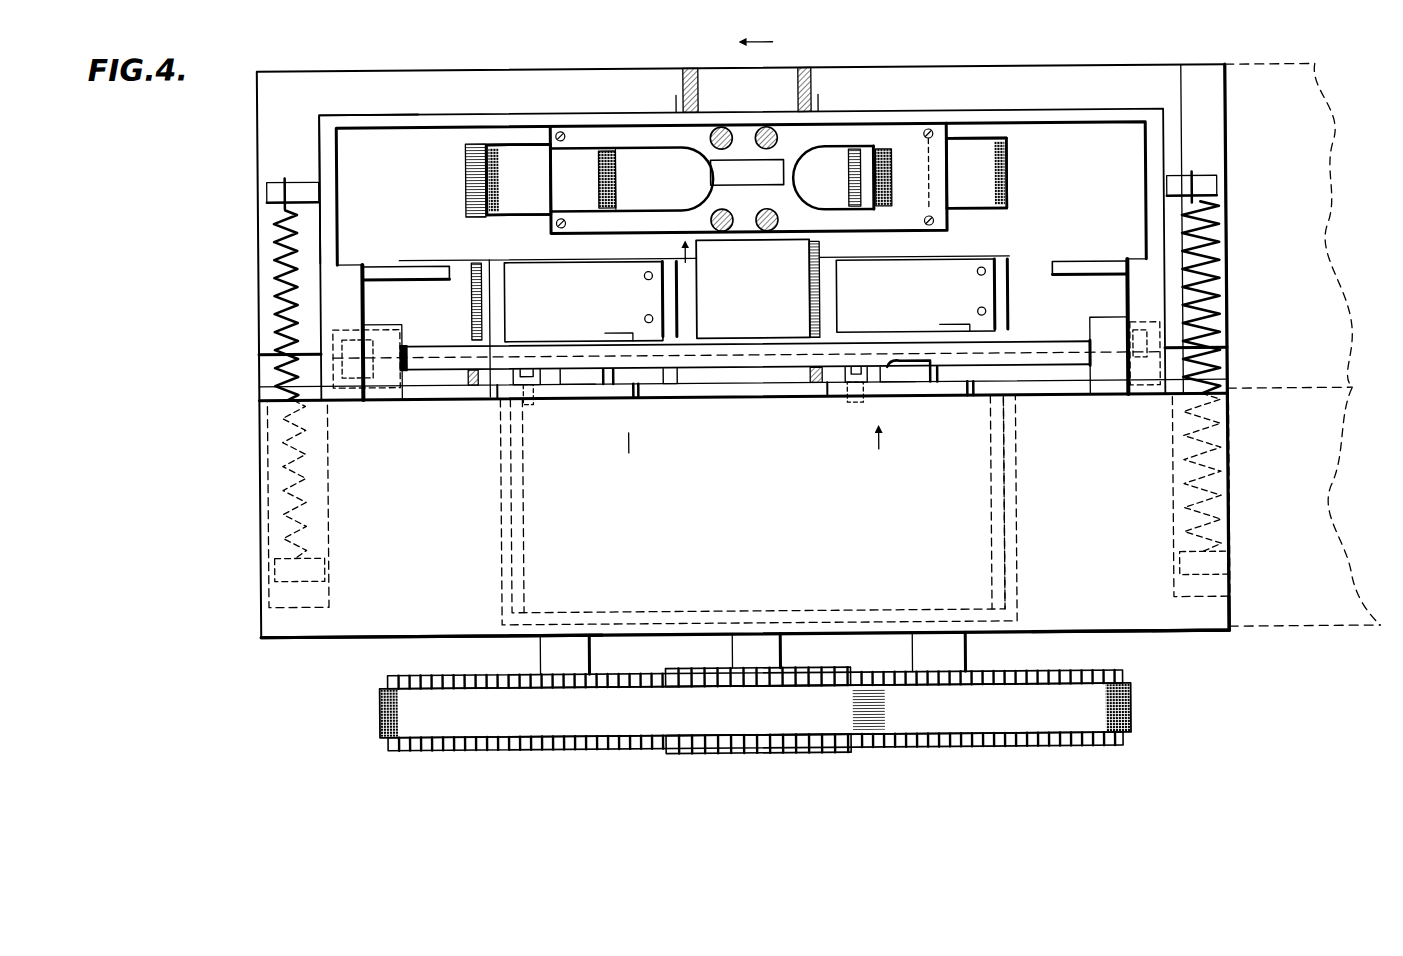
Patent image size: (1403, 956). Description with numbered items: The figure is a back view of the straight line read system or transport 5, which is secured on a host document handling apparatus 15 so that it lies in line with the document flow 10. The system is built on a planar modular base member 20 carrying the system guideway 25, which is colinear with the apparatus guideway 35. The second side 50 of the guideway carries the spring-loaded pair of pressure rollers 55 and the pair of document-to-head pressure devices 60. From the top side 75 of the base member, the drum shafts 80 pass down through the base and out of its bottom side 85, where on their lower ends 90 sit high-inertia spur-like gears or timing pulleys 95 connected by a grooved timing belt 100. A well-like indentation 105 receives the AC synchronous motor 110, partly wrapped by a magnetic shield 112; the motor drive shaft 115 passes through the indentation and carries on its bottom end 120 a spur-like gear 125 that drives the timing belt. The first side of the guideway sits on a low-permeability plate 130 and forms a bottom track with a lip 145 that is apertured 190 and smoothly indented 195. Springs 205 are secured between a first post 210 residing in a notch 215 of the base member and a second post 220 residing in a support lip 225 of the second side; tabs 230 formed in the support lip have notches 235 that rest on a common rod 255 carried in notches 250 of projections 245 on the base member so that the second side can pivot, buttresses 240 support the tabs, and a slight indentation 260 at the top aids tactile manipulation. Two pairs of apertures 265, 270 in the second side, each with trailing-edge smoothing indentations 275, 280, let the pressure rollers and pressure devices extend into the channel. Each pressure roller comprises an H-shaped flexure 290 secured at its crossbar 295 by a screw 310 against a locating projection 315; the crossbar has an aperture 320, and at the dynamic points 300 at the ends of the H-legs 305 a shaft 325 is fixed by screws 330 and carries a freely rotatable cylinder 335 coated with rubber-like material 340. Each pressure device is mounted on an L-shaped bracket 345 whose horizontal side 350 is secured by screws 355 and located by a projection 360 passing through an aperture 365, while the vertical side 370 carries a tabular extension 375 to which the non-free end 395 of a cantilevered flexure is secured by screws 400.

The straight line read system 5 is at (172, 592).
The document flow 10 is at (776, 43).
The host document handling apparatus 15 is at (1302, 344).
The modular base member 20 is at (1084, 524).
The system guideway 25 is at (1068, 66).
The apparatus guideway 35 is at (1270, 66).
The second side 50 is at (1114, 105).
The spring-loaded pressure rollers 55 is at (520, 160).
The document-to-head pressure devices 60 is at (593, 378).
The top side of base member 75 is at (260, 397).
The shaft 80 is at (588, 655).
The bottom side of base member 85 is at (1210, 636).
The lower end of shaft 90 is at (535, 668).
The spur-like gear 95 is at (538, 750).
The grooved timing belt 100 is at (1128, 708).
The well-like indentation 105 is at (500, 500).
The motor 110 is at (591, 510).
The magnetic shield 112 is at (510, 468).
The motor drive shaft 115 is at (780, 656).
The bottom end of motor drive shaft 120 is at (733, 666).
The spur-like gear 125 is at (770, 755).
The plate 130 is at (1027, 393).
The lip 145 is at (260, 373).
The aperture in lip 190 is at (497, 382).
The smooth indentation in lip 195 is at (473, 378).
The spring 205 is at (275, 252).
The first post 210 is at (273, 570).
The notch in base member 215 is at (327, 527).
The second post 220 is at (268, 190).
The support lip 225 is at (333, 113).
The tab 230 is at (358, 301).
The notch in tab 235 is at (333, 328).
The buttress 240 is at (388, 264).
The projection 245 is at (404, 342).
The notch in projection 250 is at (387, 374).
The common rod 255 is at (670, 372).
The indentation 260 is at (715, 74).
The aperture 265 is at (500, 217).
The aperture 270 is at (638, 248).
The smoothing indentation 275 is at (470, 193).
The smoothing indentation 280 is at (472, 290).
The H-shaped flexure 290 is at (690, 262).
The crossbar 295 is at (703, 166).
The dynamic points 300 is at (746, 179).
The H-legs 305 is at (623, 223).
The screw 310 is at (758, 131).
The locating projection 315 is at (739, 333).
The aperture in crossbar 320 is at (732, 178).
The shaft 325 is at (483, 158).
The screw 330 is at (562, 131).
The cylinder 335 is at (490, 178).
The rubber-like material 340 is at (544, 206).
The L-shaped bracket 345 is at (750, 457).
The horizontal side of bracket 350 is at (553, 393).
The screw 355 is at (518, 357).
The projection in base member 360 is at (608, 386).
The aperture in horizontal side 365 is at (578, 386).
The vertical side of bracket 370 is at (622, 258).
The tabular extension 375 is at (647, 279).
The non-free end of cantilevered flexure 395 is at (678, 312).
The screw 400 is at (645, 318).